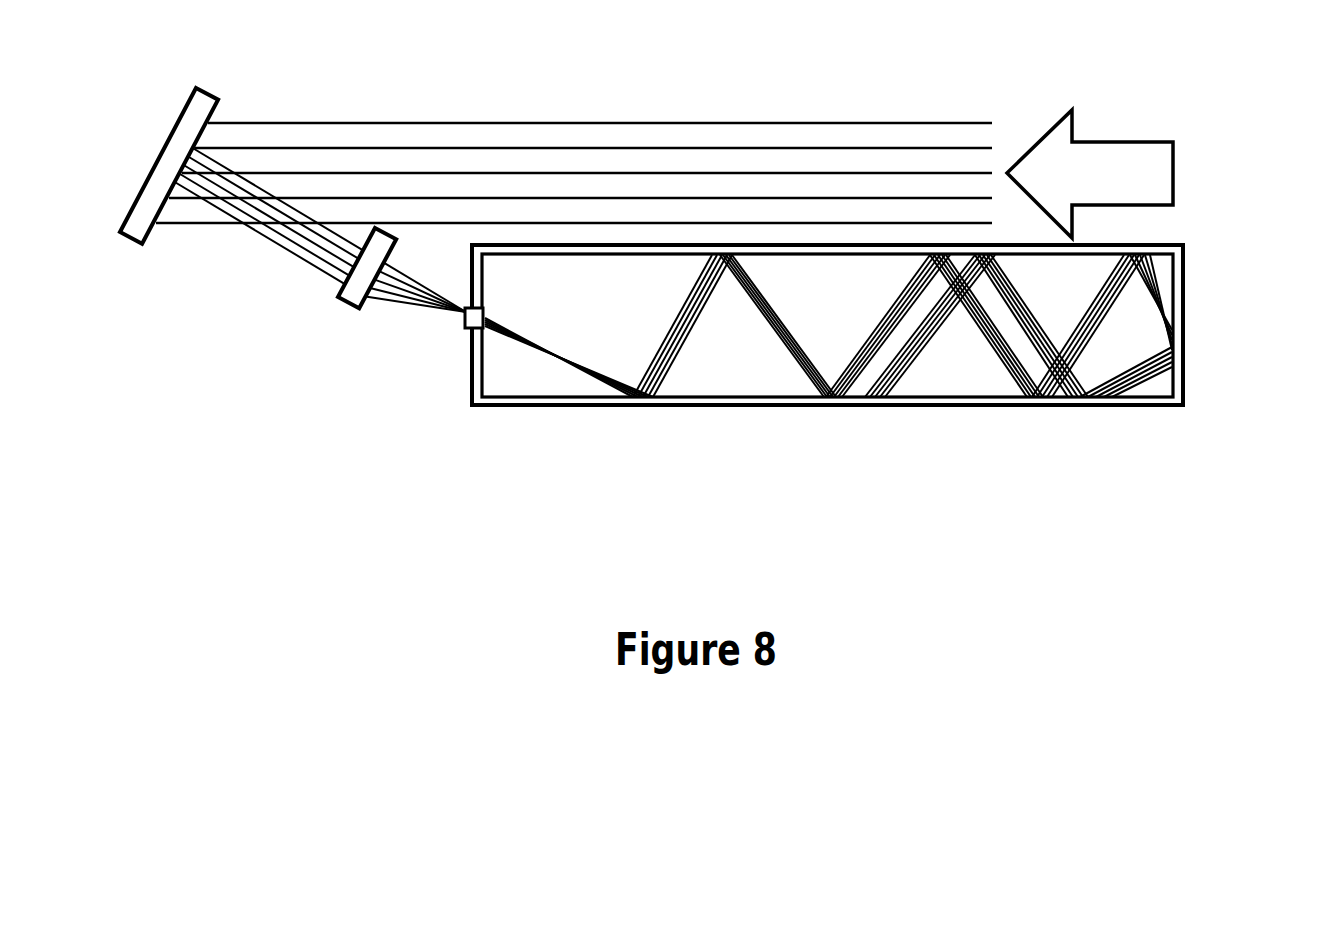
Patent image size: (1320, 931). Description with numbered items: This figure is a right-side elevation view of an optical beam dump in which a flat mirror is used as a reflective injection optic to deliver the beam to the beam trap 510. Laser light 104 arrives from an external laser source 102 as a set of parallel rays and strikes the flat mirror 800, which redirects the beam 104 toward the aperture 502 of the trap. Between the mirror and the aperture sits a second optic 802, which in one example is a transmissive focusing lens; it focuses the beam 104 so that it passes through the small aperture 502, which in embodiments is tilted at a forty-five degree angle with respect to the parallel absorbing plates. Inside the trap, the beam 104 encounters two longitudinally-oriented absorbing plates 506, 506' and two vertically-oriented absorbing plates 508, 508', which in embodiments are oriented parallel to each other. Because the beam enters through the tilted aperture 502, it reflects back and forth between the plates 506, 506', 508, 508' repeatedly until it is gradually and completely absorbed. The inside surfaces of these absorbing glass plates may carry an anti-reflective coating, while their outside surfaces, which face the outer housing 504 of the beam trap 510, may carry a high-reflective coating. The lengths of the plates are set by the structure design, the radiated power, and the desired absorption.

The external laser source 102 is at (1123, 142).
The laser beam 104 is at (687, 123).
The flat mirror 800 is at (121, 236).
The second optic 802 is at (340, 299).
The aperture 502 is at (465, 328).
The outer housing 504 is at (748, 407).
The longitudinally-oriented absorbing plate 506 is at (915, 372).
The longitudinally-oriented absorbing plate 506' is at (1207, 265).
The vertically-oriented absorbing plate 508 is at (569, 356).
The vertically-oriented absorbing plate 508' is at (1171, 416).
The beam trap 510 is at (966, 444).